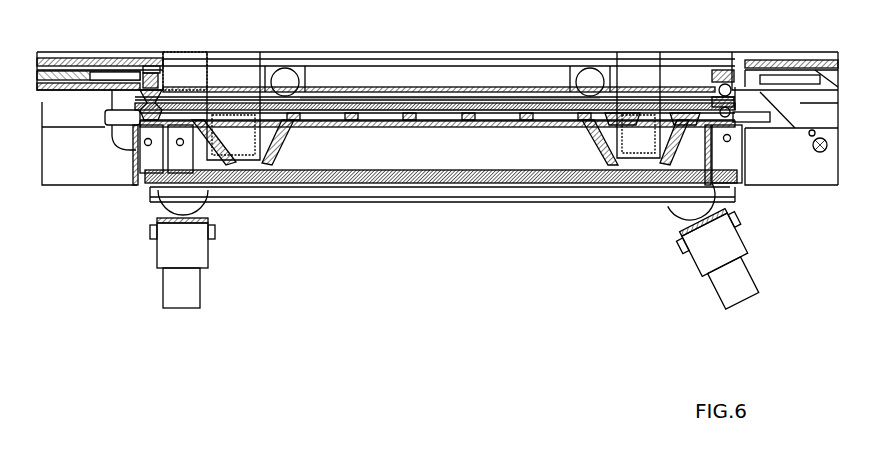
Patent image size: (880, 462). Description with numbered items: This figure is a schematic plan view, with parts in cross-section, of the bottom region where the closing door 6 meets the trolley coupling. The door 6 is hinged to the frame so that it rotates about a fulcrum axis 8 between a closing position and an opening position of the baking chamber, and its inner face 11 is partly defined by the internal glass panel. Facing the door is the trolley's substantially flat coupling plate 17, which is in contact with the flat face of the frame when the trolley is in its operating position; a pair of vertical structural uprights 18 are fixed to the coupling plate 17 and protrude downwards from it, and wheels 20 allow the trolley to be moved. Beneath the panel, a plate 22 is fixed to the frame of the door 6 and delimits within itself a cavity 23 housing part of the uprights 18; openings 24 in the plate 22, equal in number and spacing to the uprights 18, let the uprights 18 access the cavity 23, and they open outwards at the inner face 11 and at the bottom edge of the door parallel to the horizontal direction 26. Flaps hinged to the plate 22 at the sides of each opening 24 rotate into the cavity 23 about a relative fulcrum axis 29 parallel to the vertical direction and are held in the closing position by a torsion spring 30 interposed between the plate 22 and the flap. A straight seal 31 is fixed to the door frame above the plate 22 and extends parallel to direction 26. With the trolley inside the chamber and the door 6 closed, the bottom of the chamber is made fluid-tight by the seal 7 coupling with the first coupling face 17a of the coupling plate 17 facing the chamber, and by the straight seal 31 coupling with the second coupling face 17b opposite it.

The closing door 6 is at (372, 187).
The seal 7 is at (125, 128).
The fulcrum axis 8 is at (820, 152).
The inner face 11 is at (325, 106).
The coupling plate 17 is at (421, 110).
The first coupling face 17a is at (437, 96).
The second coupling face 17b is at (418, 113).
The vertical structural uprights 18 is at (232, 160).
The wheels 20 is at (180, 308).
The plate 22 is at (455, 172).
The cavity 23 is at (500, 135).
The openings 24 is at (250, 100).
The direction 26 is at (792, 194).
The fulcrum axis 29 is at (690, 100).
The torsion spring 30 is at (552, 90).
The straight seal 31 is at (360, 92).